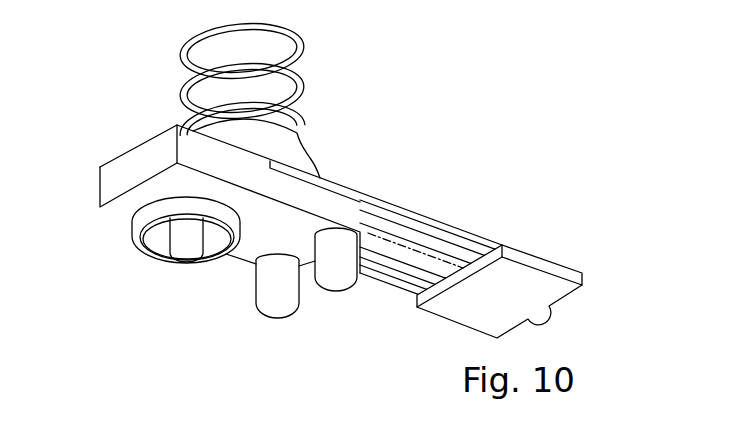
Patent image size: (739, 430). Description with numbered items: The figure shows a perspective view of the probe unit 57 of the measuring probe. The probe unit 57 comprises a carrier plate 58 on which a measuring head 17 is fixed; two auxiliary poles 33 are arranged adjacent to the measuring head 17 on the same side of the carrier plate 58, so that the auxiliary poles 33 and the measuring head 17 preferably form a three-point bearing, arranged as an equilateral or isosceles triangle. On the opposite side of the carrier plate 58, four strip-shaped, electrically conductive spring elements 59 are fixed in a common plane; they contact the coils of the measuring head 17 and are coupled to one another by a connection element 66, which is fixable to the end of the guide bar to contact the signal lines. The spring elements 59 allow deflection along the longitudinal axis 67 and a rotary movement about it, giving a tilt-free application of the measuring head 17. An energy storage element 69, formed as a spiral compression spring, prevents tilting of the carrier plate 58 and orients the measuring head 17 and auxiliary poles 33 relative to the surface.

The measuring head 17 is at (146, 260).
The auxiliary poles 33 is at (341, 283).
The probe unit 57 is at (336, 200).
The carrier plate 58 is at (248, 243).
The spring elements 59 is at (463, 214).
The connection element 66 is at (541, 265).
The axis centerline 67 is at (389, 237).
The energy storage element 69 is at (303, 89).